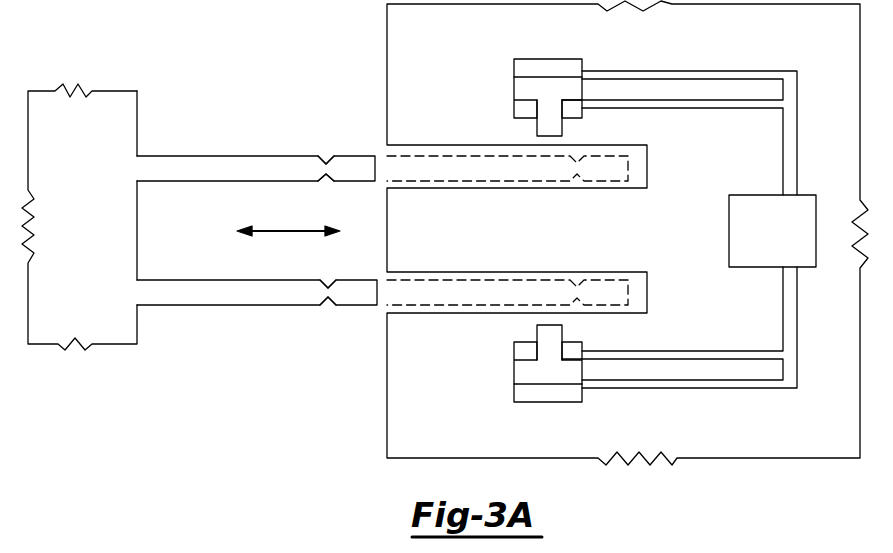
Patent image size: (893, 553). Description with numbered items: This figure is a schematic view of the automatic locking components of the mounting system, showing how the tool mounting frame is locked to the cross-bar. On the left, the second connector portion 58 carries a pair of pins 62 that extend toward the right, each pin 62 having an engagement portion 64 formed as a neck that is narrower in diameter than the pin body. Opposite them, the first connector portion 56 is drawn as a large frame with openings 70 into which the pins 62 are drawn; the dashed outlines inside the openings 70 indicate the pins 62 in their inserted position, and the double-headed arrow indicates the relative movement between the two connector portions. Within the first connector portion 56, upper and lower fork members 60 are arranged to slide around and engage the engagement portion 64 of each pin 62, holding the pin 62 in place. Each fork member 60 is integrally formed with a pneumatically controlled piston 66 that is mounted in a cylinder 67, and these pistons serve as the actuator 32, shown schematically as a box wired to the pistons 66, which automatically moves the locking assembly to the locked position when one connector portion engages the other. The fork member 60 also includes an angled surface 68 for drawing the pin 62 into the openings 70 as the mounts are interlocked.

The second connector portion 58 is at (83, 115).
The pin 62 is at (220, 167).
The engagement portion 64 is at (326, 156).
The openings 70 is at (387, 147).
The first connector portion 56 is at (410, 387).
The piston 66 is at (527, 88).
The cylinder 67 is at (540, 67).
The fork member 60 is at (548, 127).
The actuator 32 is at (784, 242).
The angled surface 68 is at (664, 552).